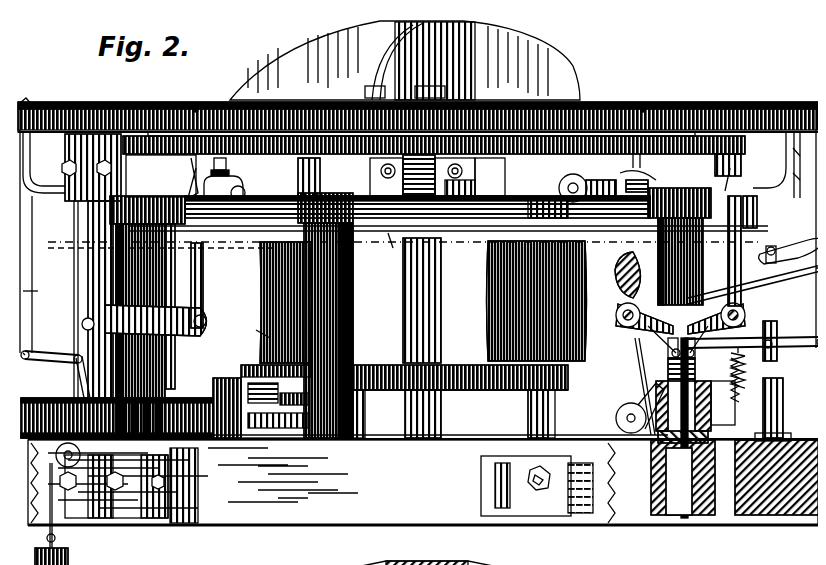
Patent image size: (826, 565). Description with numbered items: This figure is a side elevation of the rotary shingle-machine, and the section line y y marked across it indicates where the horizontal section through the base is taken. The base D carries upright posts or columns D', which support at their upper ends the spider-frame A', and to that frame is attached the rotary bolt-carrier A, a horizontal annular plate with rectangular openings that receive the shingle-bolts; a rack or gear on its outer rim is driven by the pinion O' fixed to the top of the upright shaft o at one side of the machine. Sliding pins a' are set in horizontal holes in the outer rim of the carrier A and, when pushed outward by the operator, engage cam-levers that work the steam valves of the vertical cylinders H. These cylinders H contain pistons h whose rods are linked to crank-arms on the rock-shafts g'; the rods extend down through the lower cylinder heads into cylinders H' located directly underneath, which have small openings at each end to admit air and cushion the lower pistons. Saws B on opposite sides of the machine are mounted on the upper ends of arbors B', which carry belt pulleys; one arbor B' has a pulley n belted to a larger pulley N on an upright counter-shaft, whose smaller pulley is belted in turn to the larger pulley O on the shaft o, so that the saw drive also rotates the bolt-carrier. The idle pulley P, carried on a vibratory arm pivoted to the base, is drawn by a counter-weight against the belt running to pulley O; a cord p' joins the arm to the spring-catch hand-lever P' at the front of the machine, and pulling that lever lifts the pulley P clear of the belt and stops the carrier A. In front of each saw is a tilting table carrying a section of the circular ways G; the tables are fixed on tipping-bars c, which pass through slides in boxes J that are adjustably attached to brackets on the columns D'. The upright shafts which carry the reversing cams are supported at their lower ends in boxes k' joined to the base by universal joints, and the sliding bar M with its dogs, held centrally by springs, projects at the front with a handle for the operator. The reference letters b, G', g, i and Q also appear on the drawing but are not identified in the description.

The rotary bolt-carrier A is at (418, 103).
The spider-frame A' is at (405, 293).
The sliding pins a' is at (433, 91).
The saws B is at (410, 188).
The saw-arbors B' is at (475, 386).
The frame bracket b is at (419, 227).
The tipping-bars c is at (280, 232).
The base D is at (423, 480).
The upright posts or columns D' is at (402, 313).
The circular ways G is at (434, 165).
The frame end G' is at (728, 172).
The rods g is at (410, 262).
The rock-shafts g' is at (689, 327).
The vertical cylinders H is at (635, 386).
The cushion cylinders H' is at (763, 477).
The pistons h is at (782, 165).
The base block i is at (326, 485).
The boxes J is at (253, 325).
The box k' is at (674, 428).
The sliding bar M is at (750, 215).
The larger pulley N is at (250, 352).
The pulley n is at (510, 378).
The larger pulley O is at (117, 408).
The pinion O' is at (117, 92).
The upright shaft o is at (98, 270).
The idle pulley P is at (215, 402).
The spring-catch hand-lever P' is at (788, 238).
The cord p' is at (517, 414).
The lever Q is at (32, 376).
The section line y is at (399, 243).